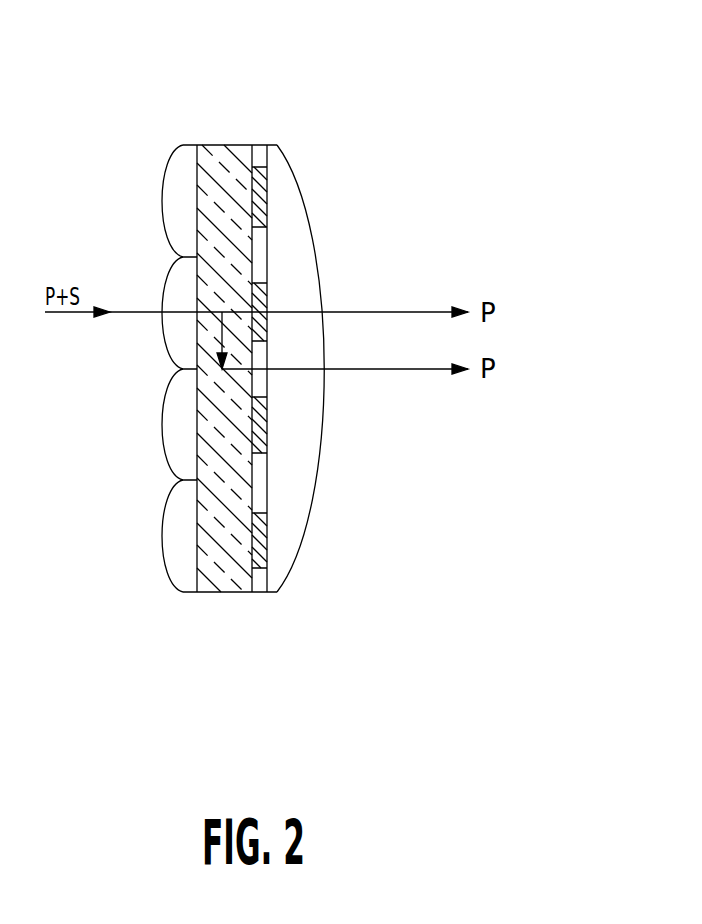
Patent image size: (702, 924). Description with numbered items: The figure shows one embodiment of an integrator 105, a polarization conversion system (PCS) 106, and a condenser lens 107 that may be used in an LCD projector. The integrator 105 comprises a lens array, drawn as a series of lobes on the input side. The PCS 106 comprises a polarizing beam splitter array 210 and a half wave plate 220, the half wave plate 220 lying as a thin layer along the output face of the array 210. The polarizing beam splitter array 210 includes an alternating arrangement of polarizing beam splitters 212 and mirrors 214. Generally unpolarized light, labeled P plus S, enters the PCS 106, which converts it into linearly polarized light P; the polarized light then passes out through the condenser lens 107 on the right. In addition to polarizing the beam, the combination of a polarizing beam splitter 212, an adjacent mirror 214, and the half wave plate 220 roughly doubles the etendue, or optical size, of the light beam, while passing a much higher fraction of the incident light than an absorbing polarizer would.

The integrator 105 is at (172, 183).
The PCS 106 is at (242, 145).
The condenser lens 107 is at (292, 192).
The polarizing beam splitter array 210 is at (218, 145).
The polarizing beam splitter 212 is at (250, 550).
The mirror 214 is at (228, 513).
The half wave plate 220 is at (260, 145).